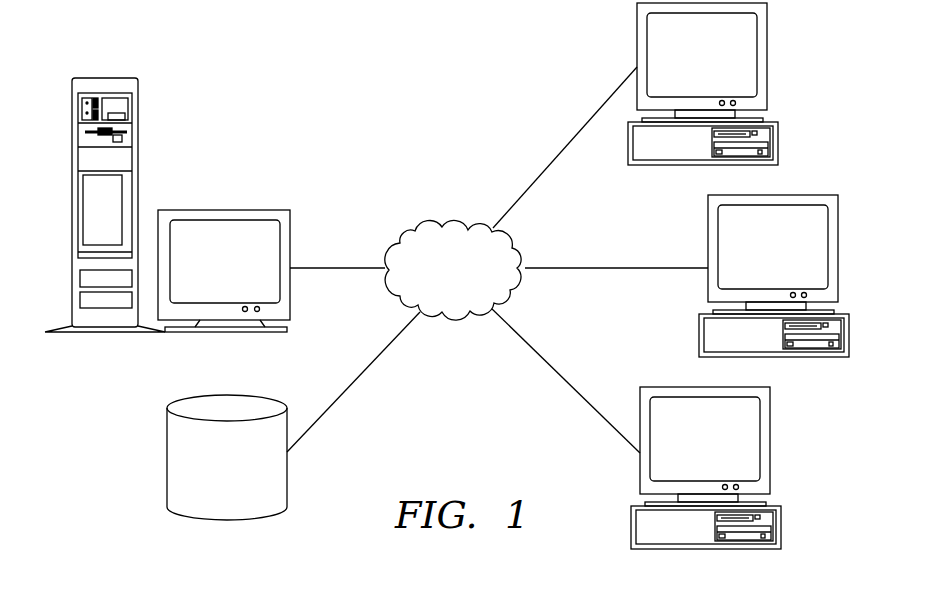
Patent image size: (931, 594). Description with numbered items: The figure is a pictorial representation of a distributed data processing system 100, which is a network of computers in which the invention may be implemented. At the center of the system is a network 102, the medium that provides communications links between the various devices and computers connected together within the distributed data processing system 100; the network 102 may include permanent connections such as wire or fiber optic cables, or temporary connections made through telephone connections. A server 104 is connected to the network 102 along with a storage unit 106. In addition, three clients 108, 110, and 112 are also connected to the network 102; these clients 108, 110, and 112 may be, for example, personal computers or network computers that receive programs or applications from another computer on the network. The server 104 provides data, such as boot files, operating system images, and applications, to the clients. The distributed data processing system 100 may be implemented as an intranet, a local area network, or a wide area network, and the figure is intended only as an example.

The distributed data processing system 100 is at (355, 50).
The network 102 is at (439, 297).
The server 104 is at (208, 274).
The storage unit 106 is at (248, 479).
The client 108 is at (687, 67).
The client 110 is at (774, 287).
The client 112 is at (706, 481).